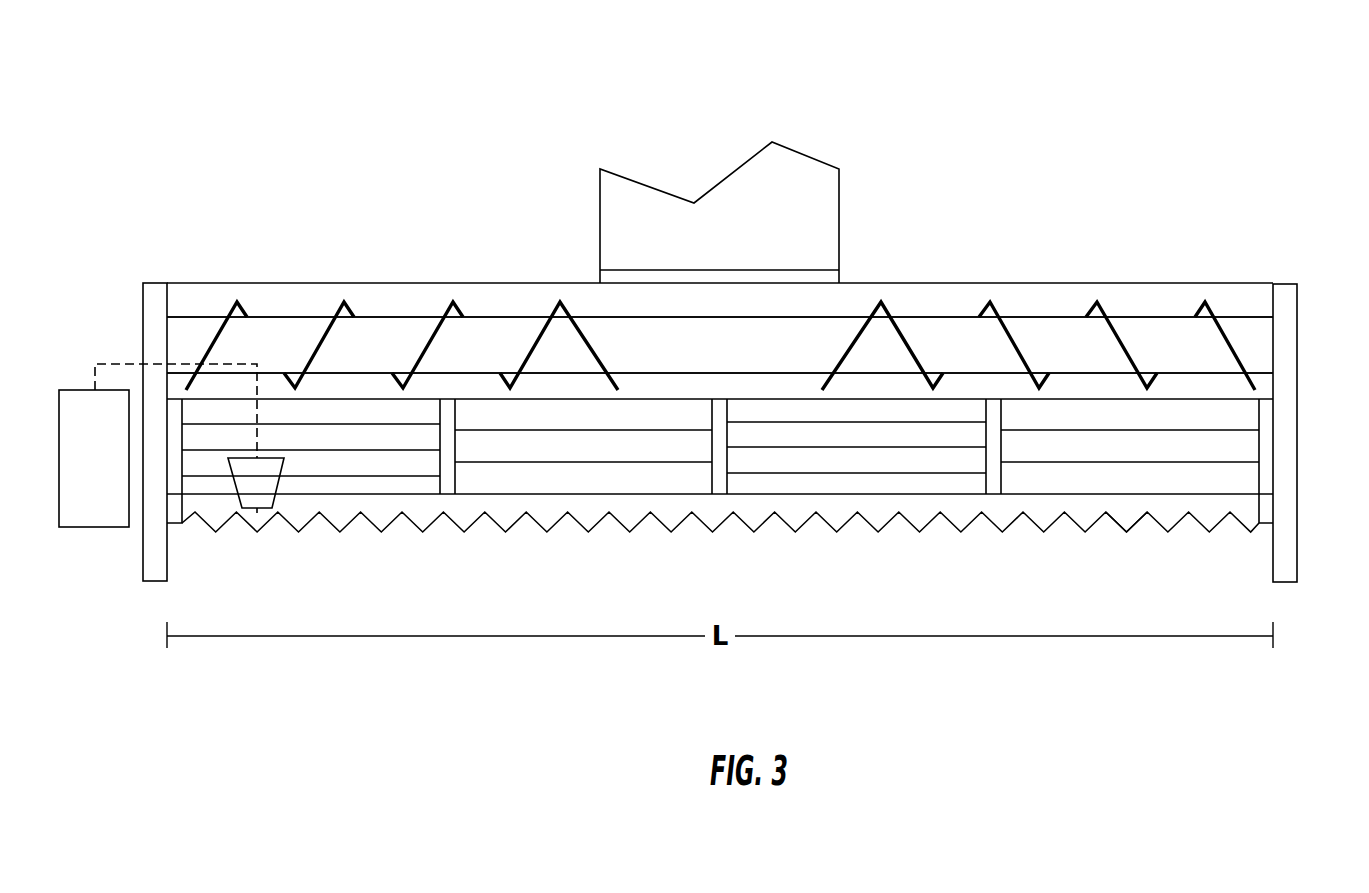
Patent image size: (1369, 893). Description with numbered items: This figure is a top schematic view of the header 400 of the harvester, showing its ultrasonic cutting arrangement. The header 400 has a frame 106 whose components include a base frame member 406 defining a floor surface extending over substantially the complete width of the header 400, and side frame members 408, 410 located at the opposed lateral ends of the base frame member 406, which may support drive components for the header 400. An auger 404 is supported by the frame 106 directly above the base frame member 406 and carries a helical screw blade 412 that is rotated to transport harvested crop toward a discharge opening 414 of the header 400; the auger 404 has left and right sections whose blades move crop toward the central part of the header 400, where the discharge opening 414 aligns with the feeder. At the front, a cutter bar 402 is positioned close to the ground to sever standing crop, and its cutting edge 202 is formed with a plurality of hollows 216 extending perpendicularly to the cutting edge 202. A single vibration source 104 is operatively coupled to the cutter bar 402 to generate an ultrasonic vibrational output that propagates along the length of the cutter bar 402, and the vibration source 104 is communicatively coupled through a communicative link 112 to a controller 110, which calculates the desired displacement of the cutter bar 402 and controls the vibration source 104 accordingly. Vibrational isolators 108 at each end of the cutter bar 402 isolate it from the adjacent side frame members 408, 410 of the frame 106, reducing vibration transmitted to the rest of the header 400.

The header 400 is at (1106, 106).
The side frame member 410 is at (155, 292).
The frame 106 is at (663, 385).
The helical screw blade 412 is at (322, 333).
The communicative link 112 is at (115, 363).
The controller 110 is at (78, 471).
The discharge opening 414 is at (767, 276).
The auger 404 is at (1067, 338).
The side frame member 408 is at (1284, 292).
The vibrational isolator 108 is at (174, 524).
The vibration source 104 is at (258, 511).
The base frame member 406 is at (720, 446).
The hollows 216 is at (855, 522).
The cutting edge 202 is at (988, 522).
The cutter bar 402 is at (1130, 520).